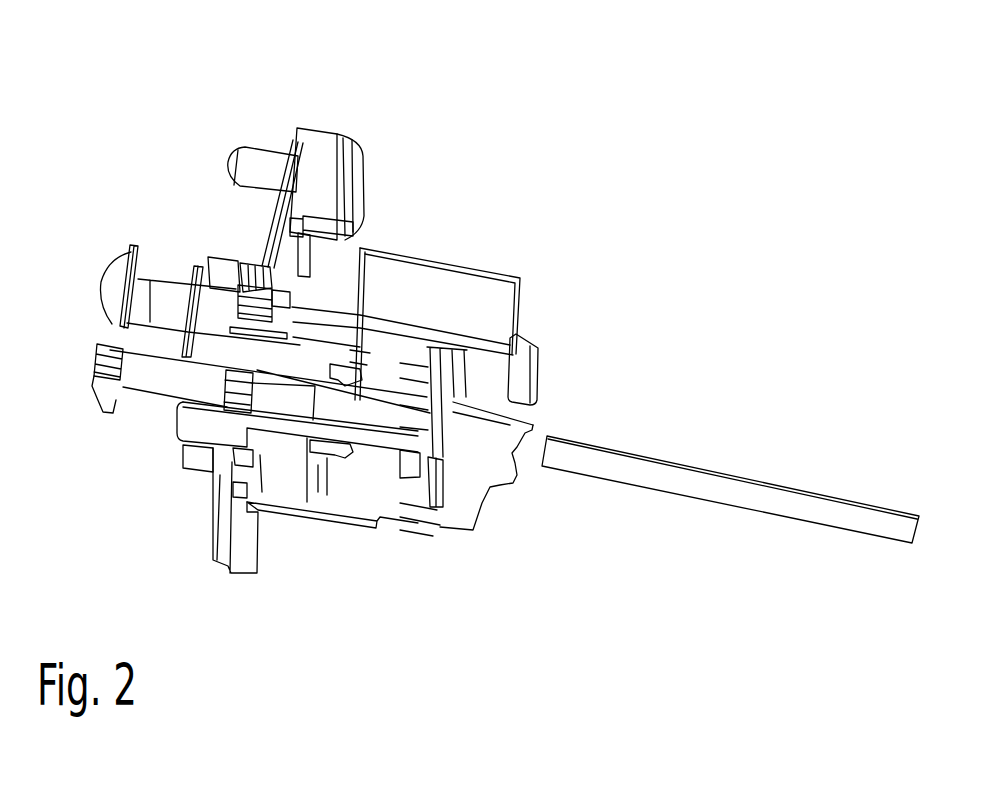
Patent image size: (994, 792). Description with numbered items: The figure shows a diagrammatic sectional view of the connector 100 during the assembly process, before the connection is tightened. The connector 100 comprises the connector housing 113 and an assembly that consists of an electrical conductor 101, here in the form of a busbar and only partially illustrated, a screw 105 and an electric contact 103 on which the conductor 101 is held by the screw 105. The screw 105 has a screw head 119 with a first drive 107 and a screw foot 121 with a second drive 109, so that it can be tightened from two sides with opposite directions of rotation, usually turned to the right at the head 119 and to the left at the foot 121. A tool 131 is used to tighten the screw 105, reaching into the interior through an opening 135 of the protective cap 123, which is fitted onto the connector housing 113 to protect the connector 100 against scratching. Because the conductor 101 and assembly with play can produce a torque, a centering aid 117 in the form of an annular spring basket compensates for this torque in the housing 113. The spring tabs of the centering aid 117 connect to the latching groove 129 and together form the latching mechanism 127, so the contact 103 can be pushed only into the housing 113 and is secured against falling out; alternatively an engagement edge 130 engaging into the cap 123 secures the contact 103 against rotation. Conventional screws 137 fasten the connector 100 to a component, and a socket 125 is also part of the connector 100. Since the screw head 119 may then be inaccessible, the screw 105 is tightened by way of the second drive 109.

The connector 100 is at (312, 96).
The electrical conductor 101 is at (212, 270).
The electric contact 103 is at (282, 428).
The screw 105 is at (144, 398).
The first drive 107 is at (95, 358).
The second drive 109 is at (238, 365).
The connector housing 113 is at (338, 250).
The centering aid 117 is at (362, 385).
The screw head 119 is at (117, 270).
The screw foot 121 is at (168, 383).
The protective cap 123 is at (527, 348).
The socket 125 is at (455, 481).
The latching mechanism 127 is at (343, 482).
The latching groove 129 is at (352, 393).
The engagement edge 130 is at (437, 507).
The tool 131 is at (748, 477).
The opening 135 is at (520, 464).
The conventional screw 137 is at (365, 172).